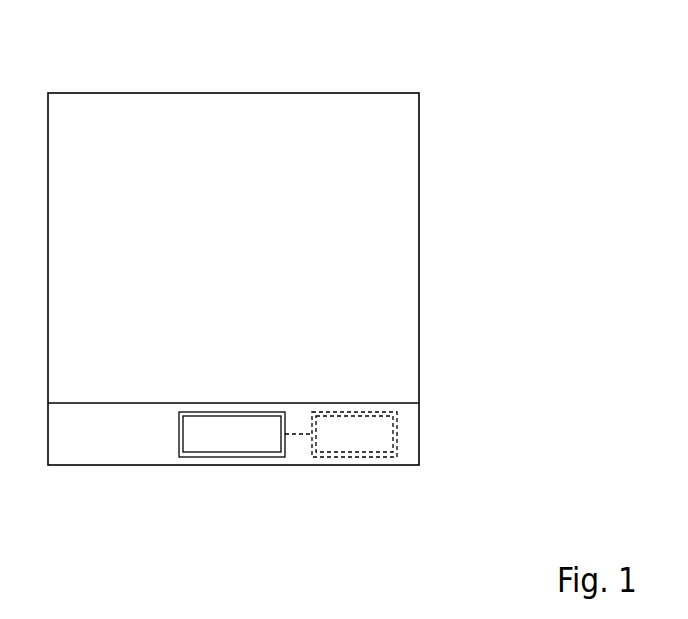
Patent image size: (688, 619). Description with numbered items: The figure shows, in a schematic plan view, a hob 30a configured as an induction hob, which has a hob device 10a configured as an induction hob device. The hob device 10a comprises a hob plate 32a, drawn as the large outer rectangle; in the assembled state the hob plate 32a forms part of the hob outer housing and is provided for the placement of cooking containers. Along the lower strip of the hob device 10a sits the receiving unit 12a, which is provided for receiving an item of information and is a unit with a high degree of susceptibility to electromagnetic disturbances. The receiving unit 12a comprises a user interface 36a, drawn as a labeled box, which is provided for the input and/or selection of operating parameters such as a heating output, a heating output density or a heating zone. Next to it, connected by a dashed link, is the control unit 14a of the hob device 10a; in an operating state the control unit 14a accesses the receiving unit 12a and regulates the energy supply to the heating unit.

The hob 30a is at (546, 93).
The hob device 10a is at (450, 136).
The hob plate 32a is at (359, 153).
The receiving unit 12a is at (194, 476).
The user interface 36a is at (232, 433).
The control unit 14a is at (354, 435).